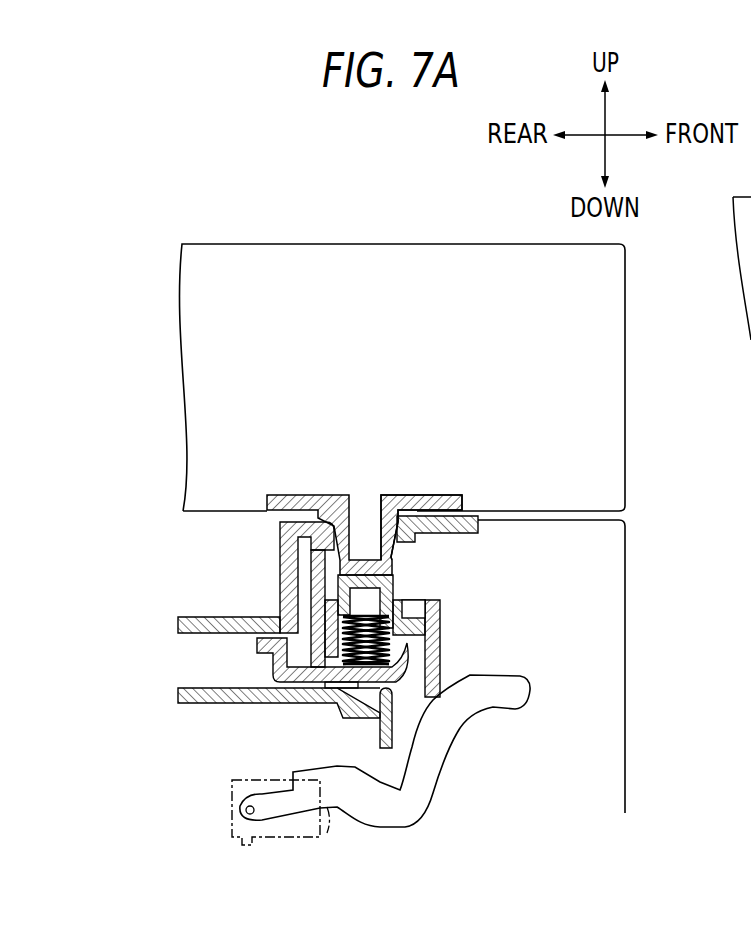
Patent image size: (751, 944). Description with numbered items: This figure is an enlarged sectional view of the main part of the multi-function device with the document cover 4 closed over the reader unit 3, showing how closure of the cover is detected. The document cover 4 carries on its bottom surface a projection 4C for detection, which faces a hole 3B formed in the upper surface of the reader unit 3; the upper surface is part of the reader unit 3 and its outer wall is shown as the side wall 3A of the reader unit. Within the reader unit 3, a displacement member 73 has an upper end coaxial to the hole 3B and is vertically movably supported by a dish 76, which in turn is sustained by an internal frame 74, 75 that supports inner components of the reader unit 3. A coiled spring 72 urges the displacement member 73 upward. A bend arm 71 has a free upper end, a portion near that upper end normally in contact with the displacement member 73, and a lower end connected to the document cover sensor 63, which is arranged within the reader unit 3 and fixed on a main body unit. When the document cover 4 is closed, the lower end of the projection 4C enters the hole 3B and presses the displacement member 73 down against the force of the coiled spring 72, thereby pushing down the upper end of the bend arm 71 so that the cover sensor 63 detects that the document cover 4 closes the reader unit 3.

The document cover 4 is at (244, 224).
The projection for detection 4C is at (349, 533).
The reader unit 3 is at (646, 603).
The side wall of main body 3A is at (625, 652).
The hole 3B is at (395, 495).
The bend arm 71 is at (443, 775).
The coiled spring 72 is at (317, 630).
The displacement member 73 is at (443, 617).
The internal frame 74 is at (222, 692).
The internal frame 75 is at (287, 567).
The dish 76 is at (262, 643).
The document cover sensor 63 is at (237, 793).